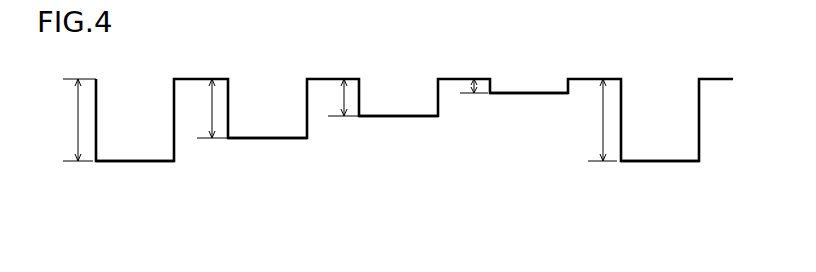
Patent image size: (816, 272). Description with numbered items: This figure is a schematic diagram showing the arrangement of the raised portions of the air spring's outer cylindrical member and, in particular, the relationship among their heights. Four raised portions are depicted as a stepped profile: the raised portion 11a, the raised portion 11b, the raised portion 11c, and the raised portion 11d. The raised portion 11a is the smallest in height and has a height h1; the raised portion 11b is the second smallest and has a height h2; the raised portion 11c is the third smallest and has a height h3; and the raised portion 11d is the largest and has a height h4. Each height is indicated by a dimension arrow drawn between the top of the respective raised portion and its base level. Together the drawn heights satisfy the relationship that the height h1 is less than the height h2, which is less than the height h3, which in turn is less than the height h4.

The raised portion of the outer cylindrical member 11a is at (528, 85).
The raised portion of the outer cylindrical member 11b is at (400, 105).
The raised portion of the outer cylindrical member 11c is at (269, 127).
The raised portion of the outer cylindrical member 11d is at (137, 148).
The height h1 is at (462, 87).
The height h2 is at (337, 97).
The height h3 is at (206, 108).
The height h4 is at (333, 120).